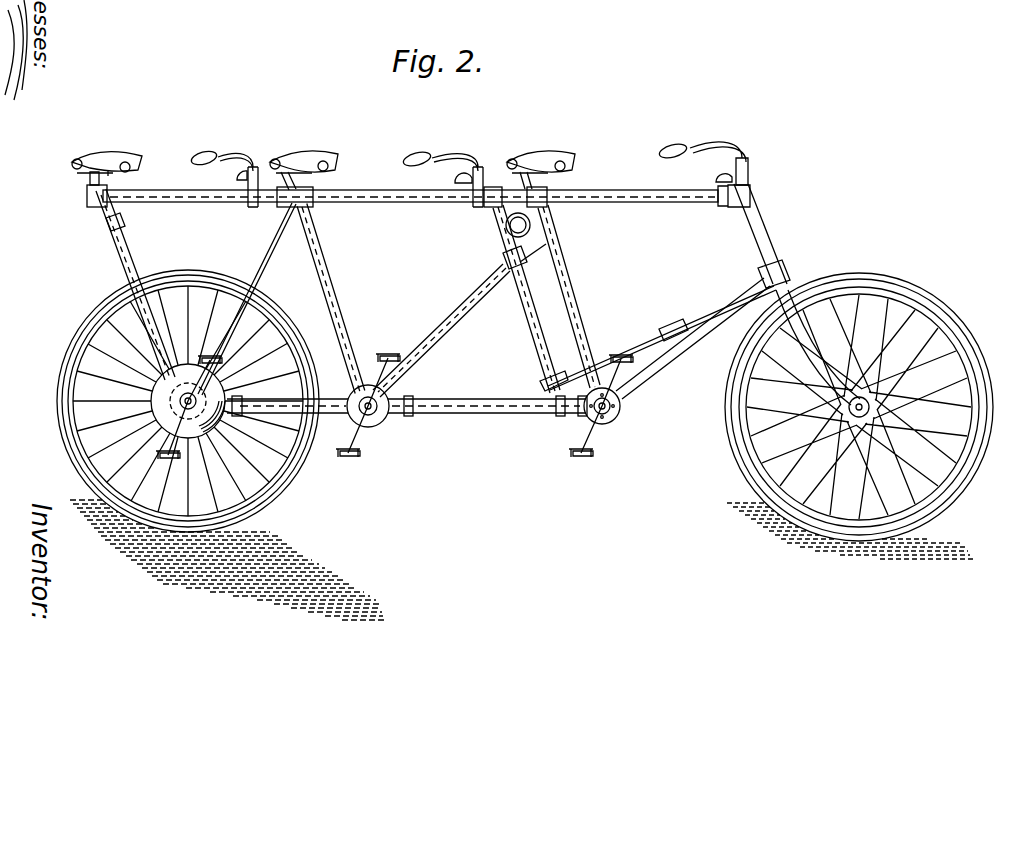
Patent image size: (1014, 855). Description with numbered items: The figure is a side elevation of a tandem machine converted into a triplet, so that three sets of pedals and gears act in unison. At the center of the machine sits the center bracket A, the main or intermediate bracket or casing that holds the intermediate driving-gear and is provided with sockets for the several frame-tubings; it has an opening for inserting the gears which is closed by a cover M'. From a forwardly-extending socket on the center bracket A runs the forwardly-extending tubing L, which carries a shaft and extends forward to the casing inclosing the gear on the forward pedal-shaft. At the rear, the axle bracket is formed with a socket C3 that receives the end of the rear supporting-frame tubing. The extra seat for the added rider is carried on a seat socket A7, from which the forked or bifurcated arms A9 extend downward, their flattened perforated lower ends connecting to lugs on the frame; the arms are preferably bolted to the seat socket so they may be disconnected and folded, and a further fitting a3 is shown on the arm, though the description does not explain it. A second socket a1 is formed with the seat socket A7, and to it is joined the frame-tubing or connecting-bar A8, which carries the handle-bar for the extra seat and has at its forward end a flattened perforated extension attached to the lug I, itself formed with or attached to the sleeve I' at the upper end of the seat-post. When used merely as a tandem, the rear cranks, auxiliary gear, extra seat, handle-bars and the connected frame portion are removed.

The seat socket A7 is at (96, 200).
The second socket a1 is at (110, 187).
The connecting-bar A8 is at (410, 207).
The collar a3 is at (111, 226).
The bifurcated arms A9 is at (125, 284).
The socket C3 is at (284, 216).
The lug I is at (229, 178).
The sleeve I' is at (304, 179).
The center bracket A is at (441, 330).
The cover M' is at (368, 405).
The forwardly-extending tubing L is at (407, 419).